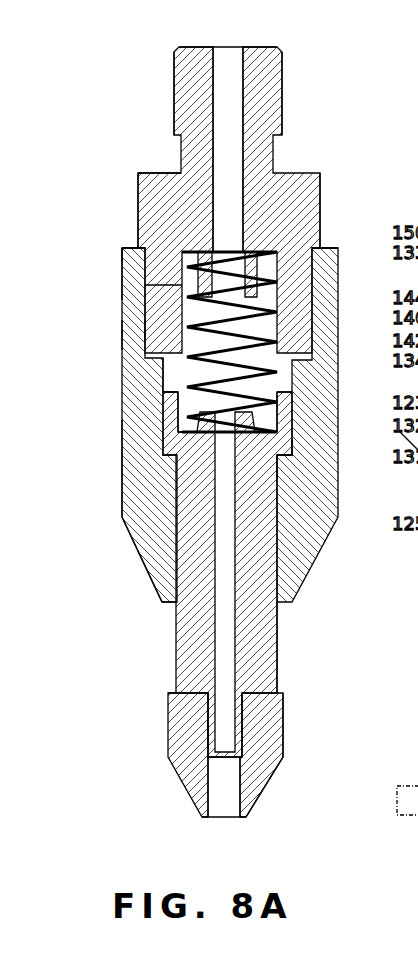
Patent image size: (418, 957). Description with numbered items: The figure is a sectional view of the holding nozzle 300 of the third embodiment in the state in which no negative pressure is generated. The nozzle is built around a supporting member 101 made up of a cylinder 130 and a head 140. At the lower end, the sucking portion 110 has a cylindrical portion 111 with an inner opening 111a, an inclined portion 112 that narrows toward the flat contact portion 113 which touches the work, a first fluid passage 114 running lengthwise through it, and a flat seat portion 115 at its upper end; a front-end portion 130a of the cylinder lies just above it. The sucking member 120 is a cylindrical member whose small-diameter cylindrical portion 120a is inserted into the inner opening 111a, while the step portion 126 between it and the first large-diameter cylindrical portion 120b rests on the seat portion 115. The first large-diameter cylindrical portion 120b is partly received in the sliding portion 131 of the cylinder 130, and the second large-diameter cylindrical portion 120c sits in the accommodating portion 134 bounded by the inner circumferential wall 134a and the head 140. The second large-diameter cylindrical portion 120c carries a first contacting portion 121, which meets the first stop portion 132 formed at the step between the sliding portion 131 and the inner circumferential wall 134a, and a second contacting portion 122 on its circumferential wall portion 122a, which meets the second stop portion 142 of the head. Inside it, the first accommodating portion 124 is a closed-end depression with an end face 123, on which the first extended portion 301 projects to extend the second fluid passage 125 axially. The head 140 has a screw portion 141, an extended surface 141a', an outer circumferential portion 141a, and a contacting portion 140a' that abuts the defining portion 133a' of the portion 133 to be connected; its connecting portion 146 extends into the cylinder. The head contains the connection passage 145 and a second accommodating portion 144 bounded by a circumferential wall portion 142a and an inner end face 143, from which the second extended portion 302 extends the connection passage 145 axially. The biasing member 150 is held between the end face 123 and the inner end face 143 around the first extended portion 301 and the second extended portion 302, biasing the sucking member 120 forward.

The holding nozzle 300 is at (171, 41).
The supporting member 101 is at (375, 163).
The sucking portion 110 is at (182, 737).
The cylindrical portion 111 is at (284, 730).
The inner opening 111a is at (266, 762).
The inclined portion 112 is at (258, 792).
The contact portion 113 is at (242, 818).
The first fluid passage 114 is at (212, 800).
The seat portion 115 is at (266, 690).
The sucking member 120 is at (196, 646).
The small-diameter cylindrical portion 120a is at (280, 710).
The first large-diameter cylindrical portion 120b is at (278, 640).
The second large-diameter cylindrical portion 120c is at (292, 453).
The first contacting portion 121 is at (290, 462).
The second contacting portion 122 is at (168, 400).
The circumferential wall portion 122a is at (178, 396).
The end face 123 is at (172, 436).
The first accommodating portion 124 is at (257, 405).
The second fluid passage 125 is at (232, 566).
The step portion 126 is at (170, 692).
The cylinder 130 is at (328, 250).
The housing lower end 130a is at (168, 604).
The sliding portion 131 is at (165, 471).
The first stop portion 132 is at (168, 445).
The portion to be connected 133 is at (162, 283).
The defining portion 133a' is at (100, 223).
The accommodating portion 134 is at (172, 372).
The inner circumferential wall 134a is at (172, 378).
The head 140 is at (320, 200).
The contacting portion 140a' is at (357, 264).
The screw portion 141 is at (174, 80).
The outer circumferential portion 141a is at (195, 205).
The extended surface 141a' is at (138, 153).
The second stop portion 142 is at (127, 336).
The circumferential wall portion 142a is at (126, 330).
The inner end face 143 is at (300, 268).
The second accommodating portion 144 is at (178, 290).
The connection passage 145 is at (230, 50).
The connecting portion 146 is at (152, 328).
The biasing member 150 is at (128, 251).
The first extended portion 301 is at (278, 430).
The second extended portion 302 is at (300, 308).